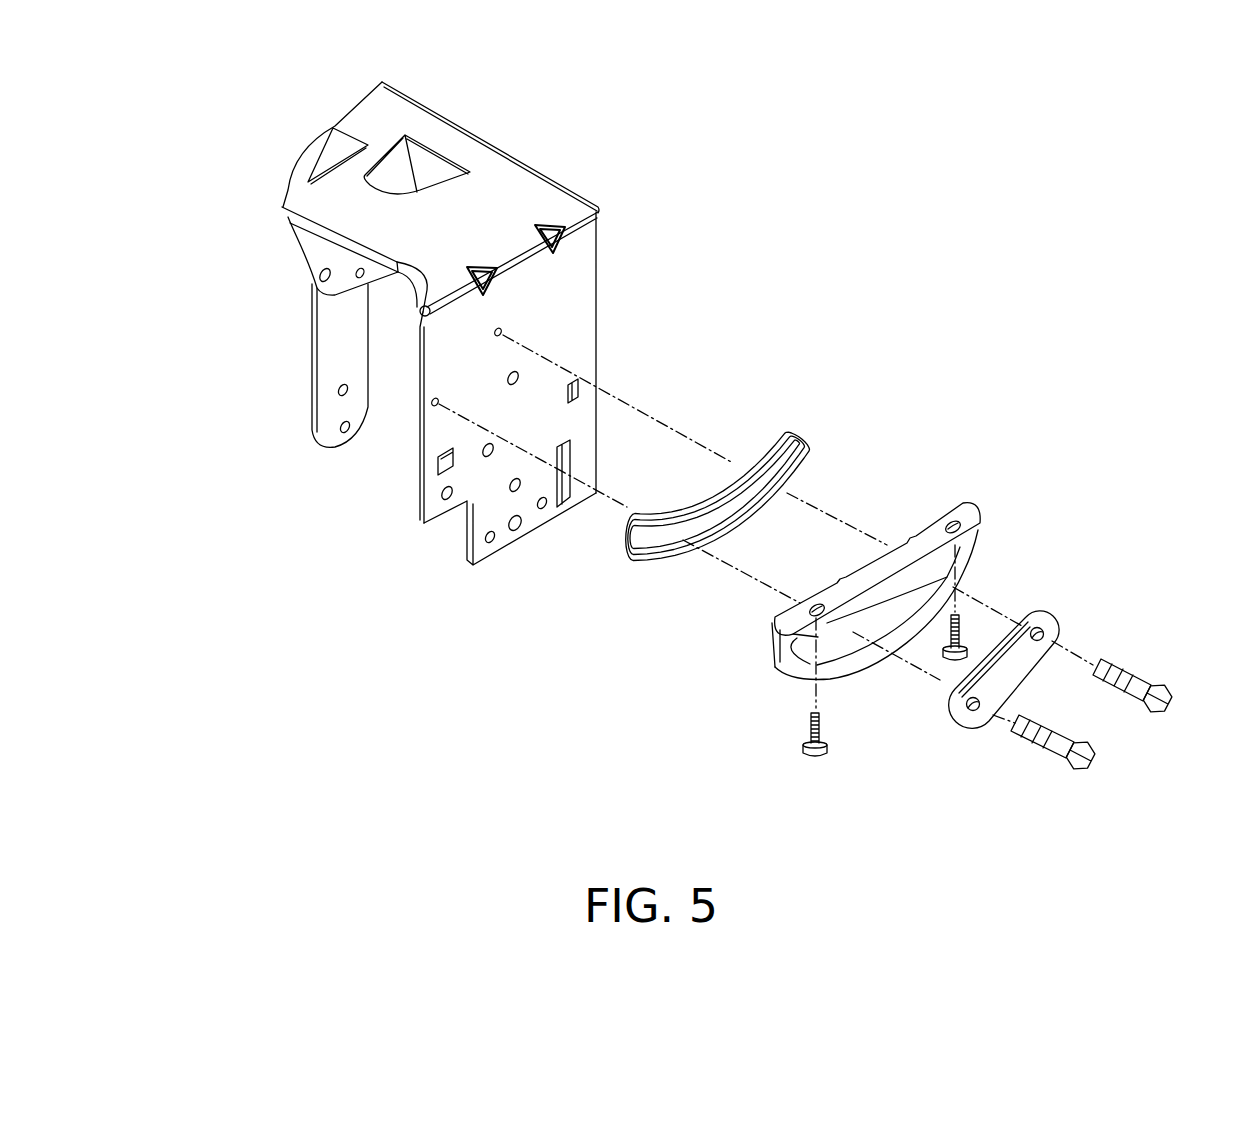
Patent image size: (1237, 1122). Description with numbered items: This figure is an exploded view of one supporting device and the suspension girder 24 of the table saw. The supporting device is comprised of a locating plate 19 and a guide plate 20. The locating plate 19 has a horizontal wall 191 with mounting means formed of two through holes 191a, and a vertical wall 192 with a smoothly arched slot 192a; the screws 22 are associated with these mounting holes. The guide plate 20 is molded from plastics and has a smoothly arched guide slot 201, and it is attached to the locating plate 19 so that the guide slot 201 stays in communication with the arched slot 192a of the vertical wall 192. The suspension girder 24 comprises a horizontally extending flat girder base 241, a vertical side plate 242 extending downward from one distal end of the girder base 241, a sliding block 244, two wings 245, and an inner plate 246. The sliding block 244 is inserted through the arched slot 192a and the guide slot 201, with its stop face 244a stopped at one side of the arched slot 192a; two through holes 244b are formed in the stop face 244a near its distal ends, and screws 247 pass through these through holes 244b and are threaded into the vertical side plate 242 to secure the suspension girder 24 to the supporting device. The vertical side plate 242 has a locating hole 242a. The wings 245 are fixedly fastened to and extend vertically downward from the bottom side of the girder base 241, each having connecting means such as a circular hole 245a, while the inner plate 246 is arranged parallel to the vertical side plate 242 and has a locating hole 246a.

The suspension girder 24 is at (451, 349).
The horizontally extending flat girder base 241 is at (475, 130).
The vertical side plate 242 is at (580, 298).
The locating hole 242a is at (515, 532).
The wing 245 is at (322, 248).
The circular hole 245a is at (323, 272).
The inner plate 246 is at (313, 360).
The locating hole 246a is at (347, 433).
The guide plate 20 is at (718, 510).
The smoothly arched guide slot 201 is at (668, 542).
The locating plate 19 is at (895, 584).
The horizontal wall 191 is at (970, 517).
The through hole 191a is at (815, 605).
The vertical wall 192 is at (962, 563).
The smoothly arched slot 192a is at (805, 650).
The screw 22 is at (823, 757).
The sliding block 244 is at (1020, 707).
The stop face 244a is at (970, 723).
The through hole 244b is at (1045, 625).
The screw 247 is at (1135, 678).